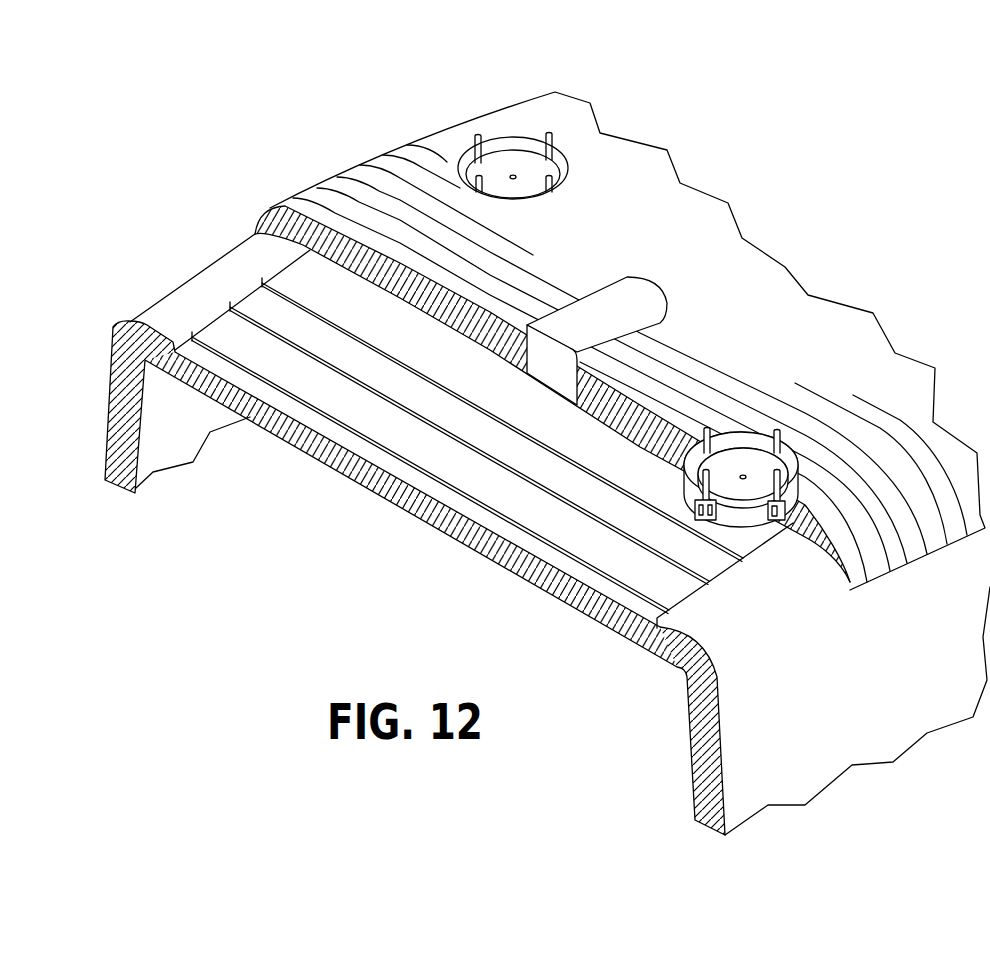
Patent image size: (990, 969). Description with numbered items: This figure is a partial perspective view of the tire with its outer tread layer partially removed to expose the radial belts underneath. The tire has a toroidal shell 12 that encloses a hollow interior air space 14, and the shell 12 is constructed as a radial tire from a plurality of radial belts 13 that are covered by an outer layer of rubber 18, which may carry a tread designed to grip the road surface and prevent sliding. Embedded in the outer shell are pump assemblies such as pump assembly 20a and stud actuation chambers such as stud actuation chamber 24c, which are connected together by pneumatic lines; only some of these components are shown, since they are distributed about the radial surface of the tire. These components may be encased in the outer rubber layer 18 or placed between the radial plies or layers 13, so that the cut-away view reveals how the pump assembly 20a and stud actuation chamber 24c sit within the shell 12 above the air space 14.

The toroidal shell 12 is at (107, 403).
The radial belts 13 is at (223, 335).
The hollow interior air space 14 is at (432, 563).
The outer layer of rubber 18 is at (436, 128).
The pump assembly 20a is at (600, 290).
The stud actuation chamber 24c is at (746, 457).